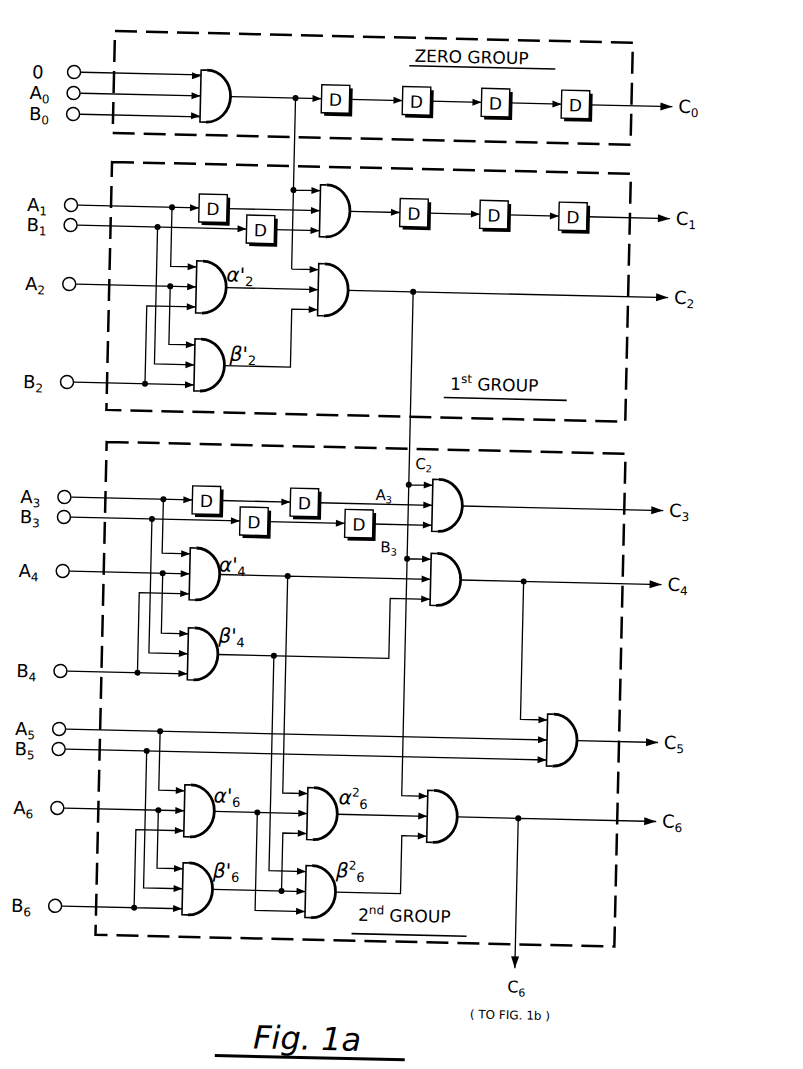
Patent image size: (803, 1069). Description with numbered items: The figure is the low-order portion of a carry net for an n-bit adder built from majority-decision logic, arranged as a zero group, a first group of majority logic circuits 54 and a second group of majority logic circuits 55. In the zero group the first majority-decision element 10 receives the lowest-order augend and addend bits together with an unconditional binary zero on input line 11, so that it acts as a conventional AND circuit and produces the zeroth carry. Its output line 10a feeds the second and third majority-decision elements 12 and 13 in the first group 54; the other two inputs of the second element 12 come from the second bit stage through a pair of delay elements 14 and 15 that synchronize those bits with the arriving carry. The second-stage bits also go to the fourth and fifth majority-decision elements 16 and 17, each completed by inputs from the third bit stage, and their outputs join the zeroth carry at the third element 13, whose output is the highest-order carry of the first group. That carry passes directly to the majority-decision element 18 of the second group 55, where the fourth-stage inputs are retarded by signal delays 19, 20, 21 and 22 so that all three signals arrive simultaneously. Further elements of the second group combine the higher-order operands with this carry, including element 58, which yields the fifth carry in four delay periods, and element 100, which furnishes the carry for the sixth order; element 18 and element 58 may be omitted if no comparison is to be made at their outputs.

The first majority-decision element 10 is at (211, 68).
The output line of gate 10 10a is at (299, 86).
The input line 11 is at (101, 70).
The second majority-decision element 12 is at (340, 183).
The third majority-decision element 13 is at (337, 262).
The delay element 14 is at (206, 192).
The delay element 15 is at (251, 234).
The fourth majority-decision element 16 is at (229, 298).
The fifth majority-decision element 17 is at (212, 340).
The majority-decision element 18 is at (462, 476).
The signal delay 19 is at (215, 484).
The signal delay 20 is at (312, 484).
The signal delay 21 is at (279, 532).
The signal delay 22 is at (362, 532).
The first group of majority logic circuits 54 is at (636, 356).
The second group of majority logic circuits 55 is at (636, 446).
The majority-decision element 58 is at (575, 708).
The AND gate 100 is at (470, 788).